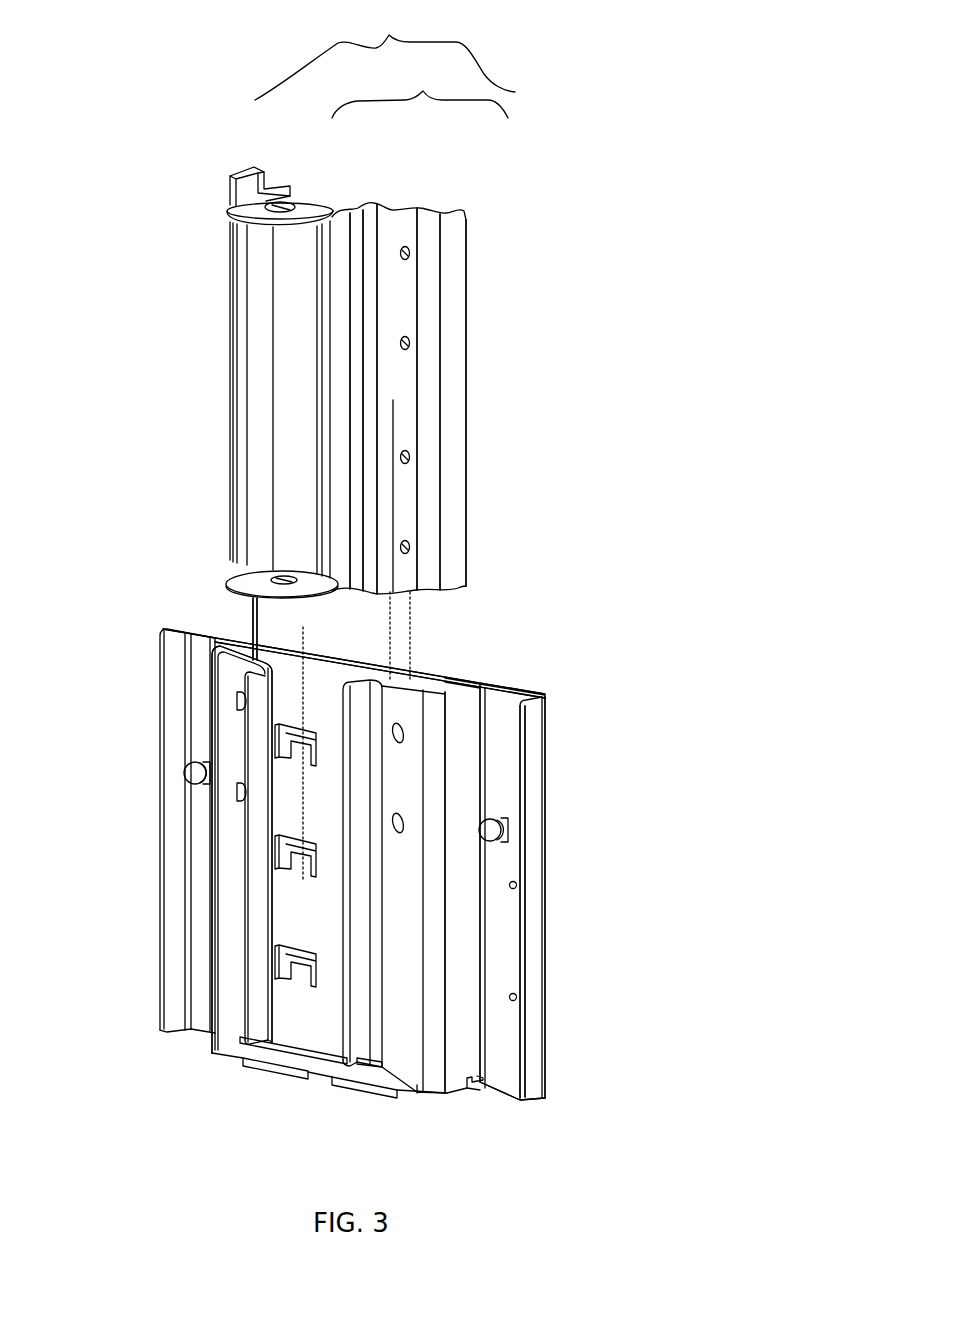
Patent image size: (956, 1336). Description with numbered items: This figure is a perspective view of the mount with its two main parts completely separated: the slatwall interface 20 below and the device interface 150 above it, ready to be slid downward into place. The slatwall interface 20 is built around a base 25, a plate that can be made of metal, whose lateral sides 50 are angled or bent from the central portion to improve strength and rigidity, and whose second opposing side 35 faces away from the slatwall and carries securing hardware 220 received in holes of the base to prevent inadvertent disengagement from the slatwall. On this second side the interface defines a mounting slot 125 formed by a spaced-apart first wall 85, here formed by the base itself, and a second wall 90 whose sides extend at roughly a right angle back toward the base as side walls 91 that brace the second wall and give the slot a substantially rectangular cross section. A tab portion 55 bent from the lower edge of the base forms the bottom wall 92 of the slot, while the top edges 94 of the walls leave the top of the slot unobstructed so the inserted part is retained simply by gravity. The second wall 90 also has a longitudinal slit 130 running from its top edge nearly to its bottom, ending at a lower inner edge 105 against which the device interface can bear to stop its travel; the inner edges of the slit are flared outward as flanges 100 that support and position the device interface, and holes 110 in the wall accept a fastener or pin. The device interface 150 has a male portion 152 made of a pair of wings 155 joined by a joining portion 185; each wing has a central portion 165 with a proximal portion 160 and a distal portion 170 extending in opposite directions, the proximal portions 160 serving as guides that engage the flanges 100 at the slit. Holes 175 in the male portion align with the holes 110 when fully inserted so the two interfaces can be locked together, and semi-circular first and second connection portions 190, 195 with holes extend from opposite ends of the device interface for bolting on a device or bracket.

The slatwall interface 20 is at (669, 816).
The base 25 is at (515, 690).
The second opposing side 35 is at (503, 1020).
The lateral sides 50 is at (162, 688).
The tab portion 55 is at (473, 1092).
The first wall 85 is at (400, 664).
The second wall 90 is at (410, 713).
The side walls 91 is at (466, 700).
The bottom wall 92 is at (272, 1073).
The top edges 94 is at (228, 659).
The flanges 100 is at (242, 832).
The lower inner edge 105 is at (297, 1044).
The holes 110 is at (406, 742).
The mounting slot 125 is at (328, 681).
The slit 130 is at (288, 918).
The device interface 150 is at (657, 352).
The male portion 152 is at (385, 53).
The wings 155 is at (420, 91).
The proximal portions 160 is at (349, 218).
The central portion 165 is at (397, 220).
The distal portions 170 is at (452, 218).
The holes 175 is at (410, 343).
The joining portion 185 is at (284, 518).
The first connection portion 190 is at (240, 200).
The second connection portion 195 is at (235, 577).
The securing hardware 220 is at (183, 768).